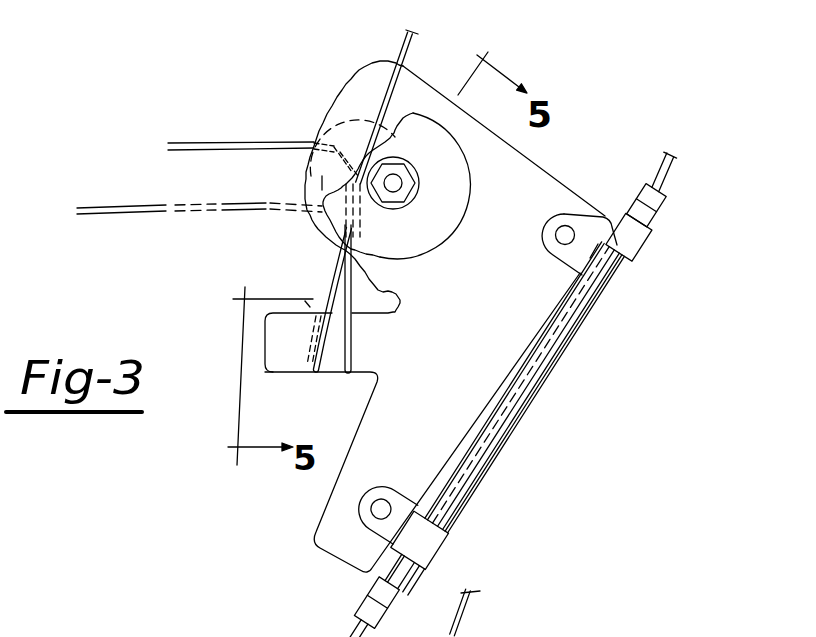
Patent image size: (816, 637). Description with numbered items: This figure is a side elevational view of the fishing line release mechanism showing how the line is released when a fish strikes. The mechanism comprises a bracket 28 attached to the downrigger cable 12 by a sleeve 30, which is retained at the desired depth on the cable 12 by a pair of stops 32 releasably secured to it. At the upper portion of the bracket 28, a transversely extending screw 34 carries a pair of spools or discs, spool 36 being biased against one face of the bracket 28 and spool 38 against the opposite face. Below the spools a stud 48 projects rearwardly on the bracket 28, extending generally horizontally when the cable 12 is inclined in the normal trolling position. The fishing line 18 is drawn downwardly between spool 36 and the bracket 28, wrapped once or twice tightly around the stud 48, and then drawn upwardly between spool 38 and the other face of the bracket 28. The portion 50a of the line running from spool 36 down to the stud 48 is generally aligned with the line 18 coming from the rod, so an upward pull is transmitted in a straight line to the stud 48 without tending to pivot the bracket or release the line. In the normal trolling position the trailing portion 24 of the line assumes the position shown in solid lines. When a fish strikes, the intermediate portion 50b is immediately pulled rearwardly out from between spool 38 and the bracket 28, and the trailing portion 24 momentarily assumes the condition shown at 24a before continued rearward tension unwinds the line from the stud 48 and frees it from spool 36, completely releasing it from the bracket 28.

The cable 12 is at (669, 187).
The fishing line 18 is at (413, 47).
The trailing portion of the line 24 is at (243, 103).
The released trailing portion of the line 24a is at (132, 165).
The bracket 28 is at (527, 190).
The sleeve 30 is at (512, 418).
The stops 32 is at (650, 228).
The screw 34 is at (396, 188).
The spool 36 is at (447, 186).
The spool 38 is at (362, 122).
The stud 48 is at (278, 357).
The line portion from spool to stud 50a is at (352, 293).
The intermediate line portion 50b is at (343, 244).